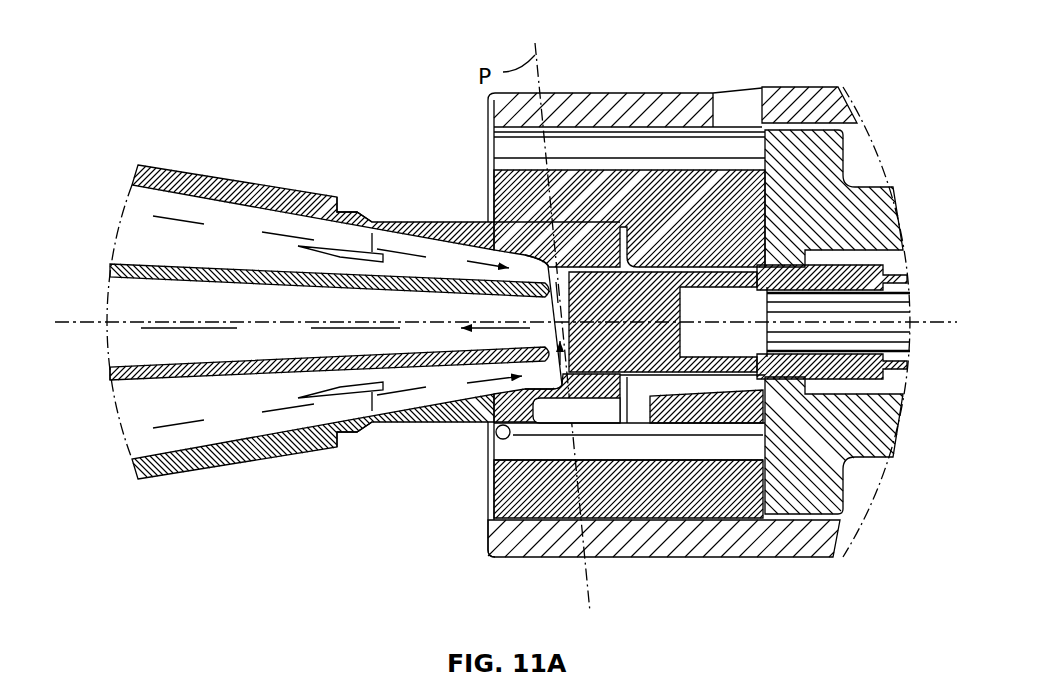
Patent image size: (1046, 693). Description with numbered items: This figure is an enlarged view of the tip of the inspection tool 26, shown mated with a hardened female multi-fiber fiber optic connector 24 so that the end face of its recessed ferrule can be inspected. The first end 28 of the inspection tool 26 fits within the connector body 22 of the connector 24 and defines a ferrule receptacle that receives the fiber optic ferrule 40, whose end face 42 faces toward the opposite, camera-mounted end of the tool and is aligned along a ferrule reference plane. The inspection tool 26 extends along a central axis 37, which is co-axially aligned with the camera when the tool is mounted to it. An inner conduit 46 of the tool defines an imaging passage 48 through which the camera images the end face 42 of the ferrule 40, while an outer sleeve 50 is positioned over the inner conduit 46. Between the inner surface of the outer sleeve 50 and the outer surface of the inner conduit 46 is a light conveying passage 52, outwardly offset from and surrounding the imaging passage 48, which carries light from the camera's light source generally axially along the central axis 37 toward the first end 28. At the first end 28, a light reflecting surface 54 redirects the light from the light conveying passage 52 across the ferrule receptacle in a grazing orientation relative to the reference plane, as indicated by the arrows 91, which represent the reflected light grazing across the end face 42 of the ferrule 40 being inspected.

The connector body 22 is at (712, 557).
The hardened female multi-fiber fiber optic connector 24 is at (812, 85).
The inspection tool 26 is at (242, 176).
The first end 28 is at (588, 222).
The central axis 37 is at (80, 322).
The fiber optic ferrule 40 is at (630, 268).
The end face 42 is at (569, 322).
The inner conduit 46 is at (122, 380).
The imaging passage 48 is at (132, 305).
The outer sleeve 50 is at (302, 197).
The light conveying passage 52 is at (173, 222).
The light reflecting surface 54 is at (548, 268).
The arrows representative of reflected light 91 is at (585, 300).